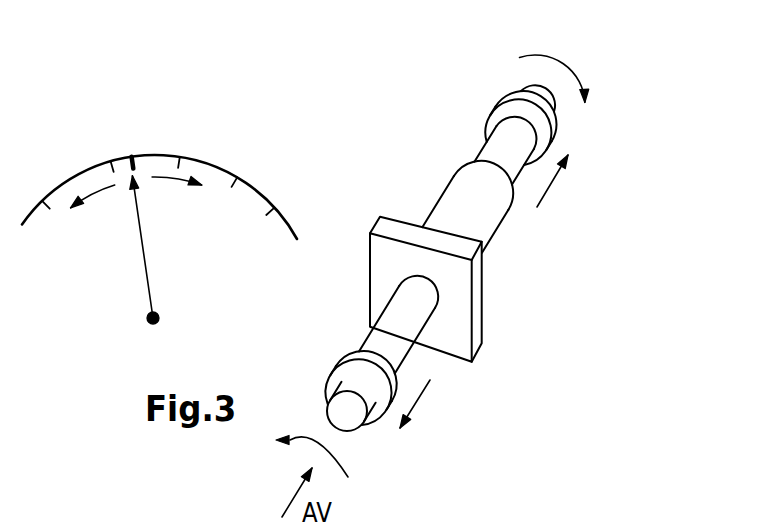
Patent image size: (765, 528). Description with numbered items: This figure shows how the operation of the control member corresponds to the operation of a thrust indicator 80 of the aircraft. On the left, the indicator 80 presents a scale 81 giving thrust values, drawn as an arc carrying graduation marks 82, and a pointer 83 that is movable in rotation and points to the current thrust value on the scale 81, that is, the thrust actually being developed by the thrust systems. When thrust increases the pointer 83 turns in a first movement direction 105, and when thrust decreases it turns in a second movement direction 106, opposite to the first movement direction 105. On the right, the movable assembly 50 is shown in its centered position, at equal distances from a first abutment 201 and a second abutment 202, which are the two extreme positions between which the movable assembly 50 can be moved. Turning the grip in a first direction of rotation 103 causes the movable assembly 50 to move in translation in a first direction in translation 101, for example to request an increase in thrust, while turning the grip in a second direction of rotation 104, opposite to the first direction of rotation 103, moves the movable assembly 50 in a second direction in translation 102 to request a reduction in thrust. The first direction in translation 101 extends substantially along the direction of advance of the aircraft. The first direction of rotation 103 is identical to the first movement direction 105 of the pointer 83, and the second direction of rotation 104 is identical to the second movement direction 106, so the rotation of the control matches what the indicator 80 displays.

The indicator 80 is at (179, 202).
The scale 81 is at (275, 200).
The graduation marks 82 is at (278, 213).
The pointer 83 is at (150, 288).
The first movement direction 105 is at (165, 179).
The second movement direction 106 is at (113, 189).
The first direction in translation 101 is at (553, 187).
The second direction in translation 102 is at (420, 400).
The first direction of rotation 103 is at (556, 62).
The second direction of rotation 104 is at (342, 458).
The first abutment 201 is at (493, 122).
The second abutment 202 is at (360, 352).
The movable assembly 50 is at (510, 276).